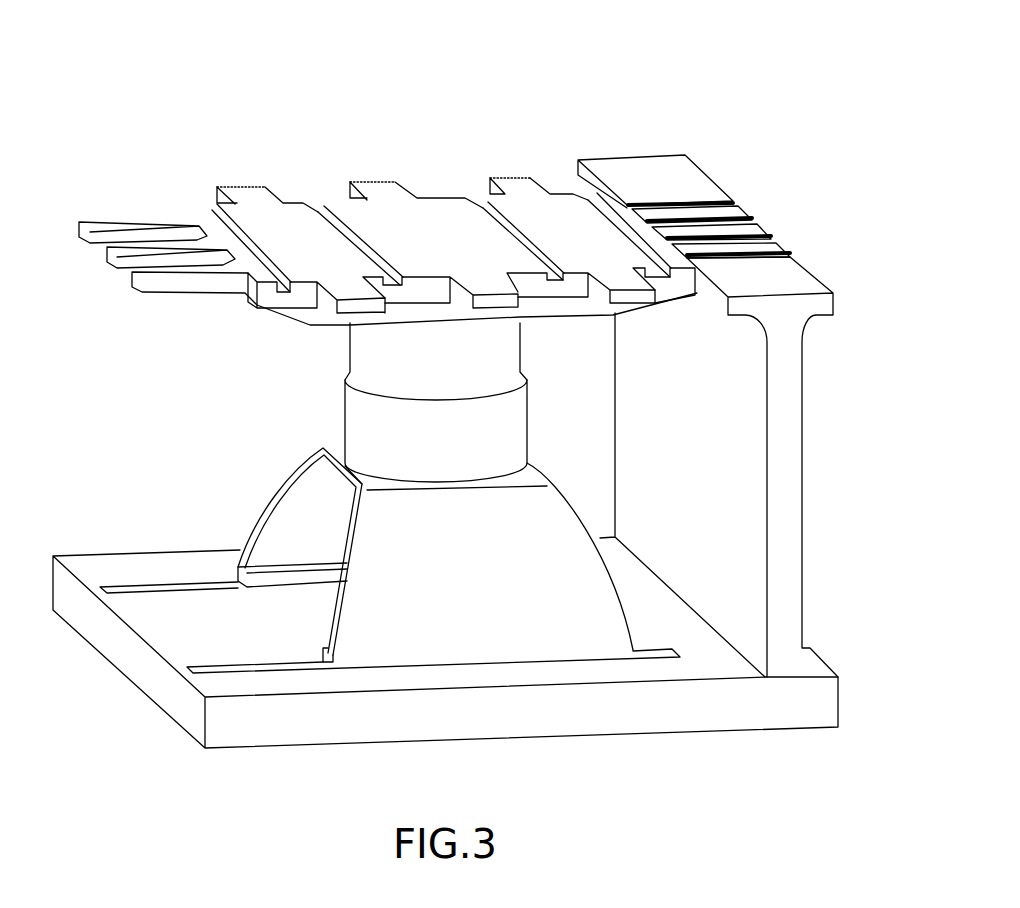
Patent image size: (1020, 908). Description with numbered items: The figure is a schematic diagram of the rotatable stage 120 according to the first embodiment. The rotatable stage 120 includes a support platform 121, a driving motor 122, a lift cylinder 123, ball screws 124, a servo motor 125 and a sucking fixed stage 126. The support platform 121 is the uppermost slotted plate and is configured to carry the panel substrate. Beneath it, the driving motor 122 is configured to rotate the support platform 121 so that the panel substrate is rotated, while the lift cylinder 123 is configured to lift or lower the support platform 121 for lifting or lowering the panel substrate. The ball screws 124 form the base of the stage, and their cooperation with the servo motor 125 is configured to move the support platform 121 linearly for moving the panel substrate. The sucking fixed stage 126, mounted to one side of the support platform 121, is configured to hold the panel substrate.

The rotatable stage 120 is at (541, 139).
The support platform 121 is at (388, 200).
The driving motor 122 is at (368, 340).
The lift cylinder 123 is at (362, 413).
The ball screws 124 is at (207, 670).
The servo motor 125 is at (648, 653).
The sucking fixed stage 126 is at (778, 249).